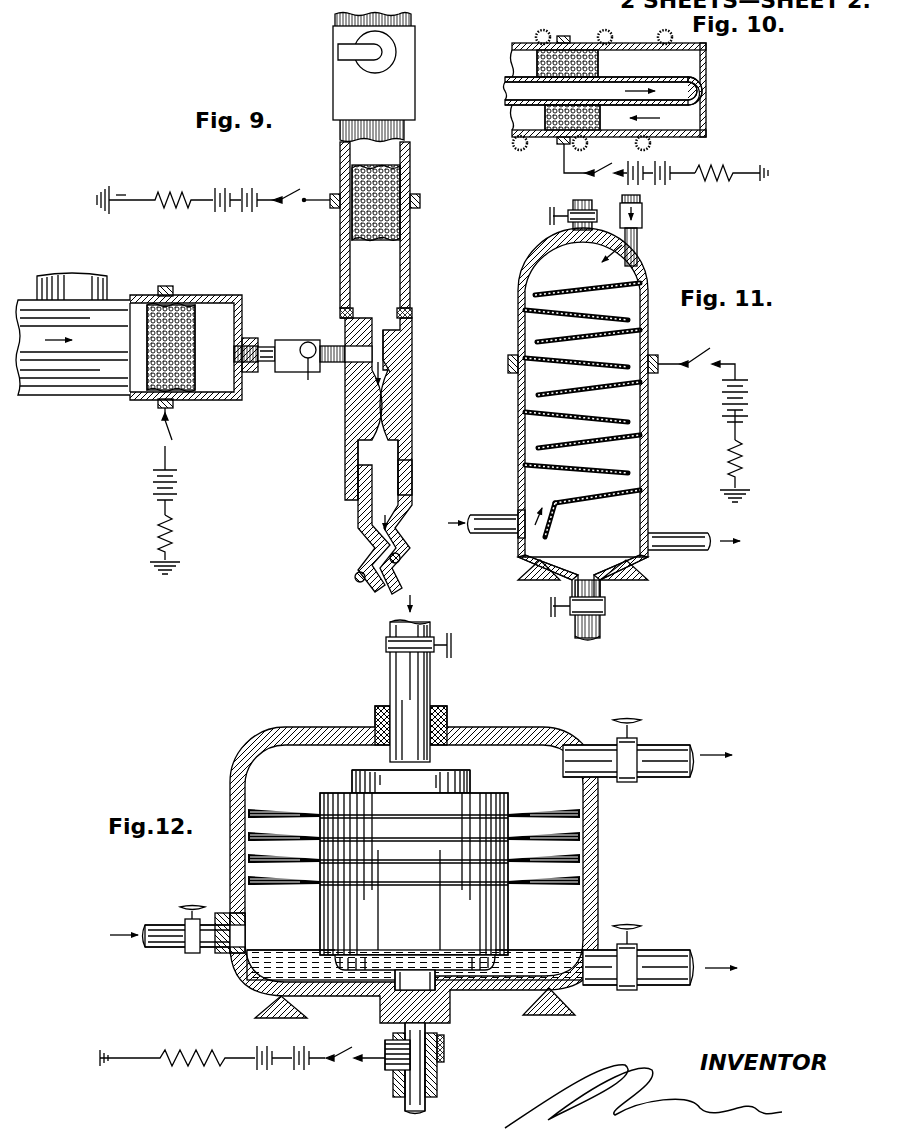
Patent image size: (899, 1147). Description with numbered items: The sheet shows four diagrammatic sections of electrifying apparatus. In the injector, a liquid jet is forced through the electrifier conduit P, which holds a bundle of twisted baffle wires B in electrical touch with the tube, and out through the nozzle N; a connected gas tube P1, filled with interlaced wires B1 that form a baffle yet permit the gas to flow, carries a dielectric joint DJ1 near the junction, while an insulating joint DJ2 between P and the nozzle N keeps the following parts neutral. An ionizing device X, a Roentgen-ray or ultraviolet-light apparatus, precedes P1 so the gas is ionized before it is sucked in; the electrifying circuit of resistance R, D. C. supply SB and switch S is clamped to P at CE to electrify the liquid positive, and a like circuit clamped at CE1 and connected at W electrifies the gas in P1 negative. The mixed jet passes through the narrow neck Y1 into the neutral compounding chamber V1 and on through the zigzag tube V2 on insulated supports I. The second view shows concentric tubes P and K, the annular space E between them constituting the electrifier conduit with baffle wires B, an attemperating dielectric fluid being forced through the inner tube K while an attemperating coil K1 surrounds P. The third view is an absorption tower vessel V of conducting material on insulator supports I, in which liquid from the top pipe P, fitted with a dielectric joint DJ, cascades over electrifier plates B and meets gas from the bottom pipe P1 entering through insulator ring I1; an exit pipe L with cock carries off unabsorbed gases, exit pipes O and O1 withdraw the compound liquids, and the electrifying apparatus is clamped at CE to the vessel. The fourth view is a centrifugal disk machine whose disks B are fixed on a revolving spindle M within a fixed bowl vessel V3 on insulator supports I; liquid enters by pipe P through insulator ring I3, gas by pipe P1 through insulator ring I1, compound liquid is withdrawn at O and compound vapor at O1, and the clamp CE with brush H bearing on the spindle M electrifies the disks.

In FIG. 9, the resistance R is at (172, 200).
In FIG. 10, the resistance R is at (717, 172).
In FIG. 11, the resistance R is at (745, 462).
In FIG. 12, the resistance R is at (215, 1068).
In FIG. 9, the D. C. supply SB is at (237, 200).
In FIG. 10, the D. C. supply SB is at (660, 170).
In FIG. 11, the D. C. supply SB is at (748, 401).
In FIG. 12, the D. C. supply SB is at (282, 1066).
In FIG. 9, the switch S is at (290, 190).
In FIG. 10, the switch S is at (600, 176).
In FIG. 11, the switch S is at (703, 385).
In FIG. 12, the switch S is at (344, 1064).
In FIG. 9, the ionizing device X is at (75, 276).
In FIG. 9, the gas tube P1 is at (132, 296).
In FIG. 11, the gas tube P1 is at (495, 534).
In FIG. 12, the gas tube P1 is at (168, 948).
In FIG. 9, the clamp CE1 is at (170, 289).
In FIG. 9, the wire / electrode W is at (164, 406).
In FIG. 12, the wire / electrode W is at (384, 1060).
In FIG. 9, the interlaced wires B1 is at (192, 360).
In FIG. 9, the dielectric joint DJ1 is at (290, 364).
In FIG. 9, the dielectric joint DJ is at (405, 100).
In FIG. 11, the dielectric joint DJ is at (644, 217).
In FIG. 9, the insulating joint DJ2 is at (414, 312).
In FIG. 9, the baffle B is at (392, 170).
In FIG. 10, the baffle B is at (540, 62).
In FIG. 11, the baffle B is at (600, 288).
In FIG. 12, the baffle B is at (414, 870).
In FIG. 9, the electrifier conduit P is at (411, 238).
In FIG. 10, the electrifier conduit P is at (652, 45).
In FIG. 11, the electrifier conduit P is at (640, 254).
In FIG. 12, the electrifier conduit P is at (432, 692).
In FIG. 9, the clamp CE is at (333, 206).
In FIG. 11, the clamp CE is at (656, 356).
In FIG. 12, the clamp CE is at (446, 1052).
In FIG. 9, the nozzle N is at (402, 342).
In FIG. 9, the narrow neck Y1 is at (400, 405).
In FIG. 9, the compounding chamber V1 is at (365, 450).
In FIG. 9, the zigzag tube V2 is at (370, 527).
In FIG. 9, the insulator supports I is at (355, 576).
In FIG. 11, the insulator supports I is at (535, 578).
In FIG. 12, the insulator supports I is at (275, 1010).
In FIG. 10, the inner tube K is at (603, 91).
In FIG. 10, the attemperating coil K1 is at (487, 162).
In FIG. 10, the annular space E is at (650, 90).
In FIG. 11, the exit pipe L is at (568, 212).
In FIG. 11, the insulator ring I1 is at (518, 515).
In FIG. 12, the insulator ring I1 is at (228, 955).
In FIG. 11, the exit pipe O is at (690, 552).
In FIG. 12, the exit pipe O is at (652, 950).
In FIG. 11, the exit pipe O1 is at (600, 624).
In FIG. 12, the exit pipe O1 is at (660, 745).
In FIG. 11, the vessel V is at (649, 442).
In FIG. 12, the insulator ring I3 is at (378, 720).
In FIG. 12, the bowl vessel V3 is at (598, 874).
In FIG. 12, the brush H is at (395, 1092).
In FIG. 12, the revolving spindle M is at (425, 1100).